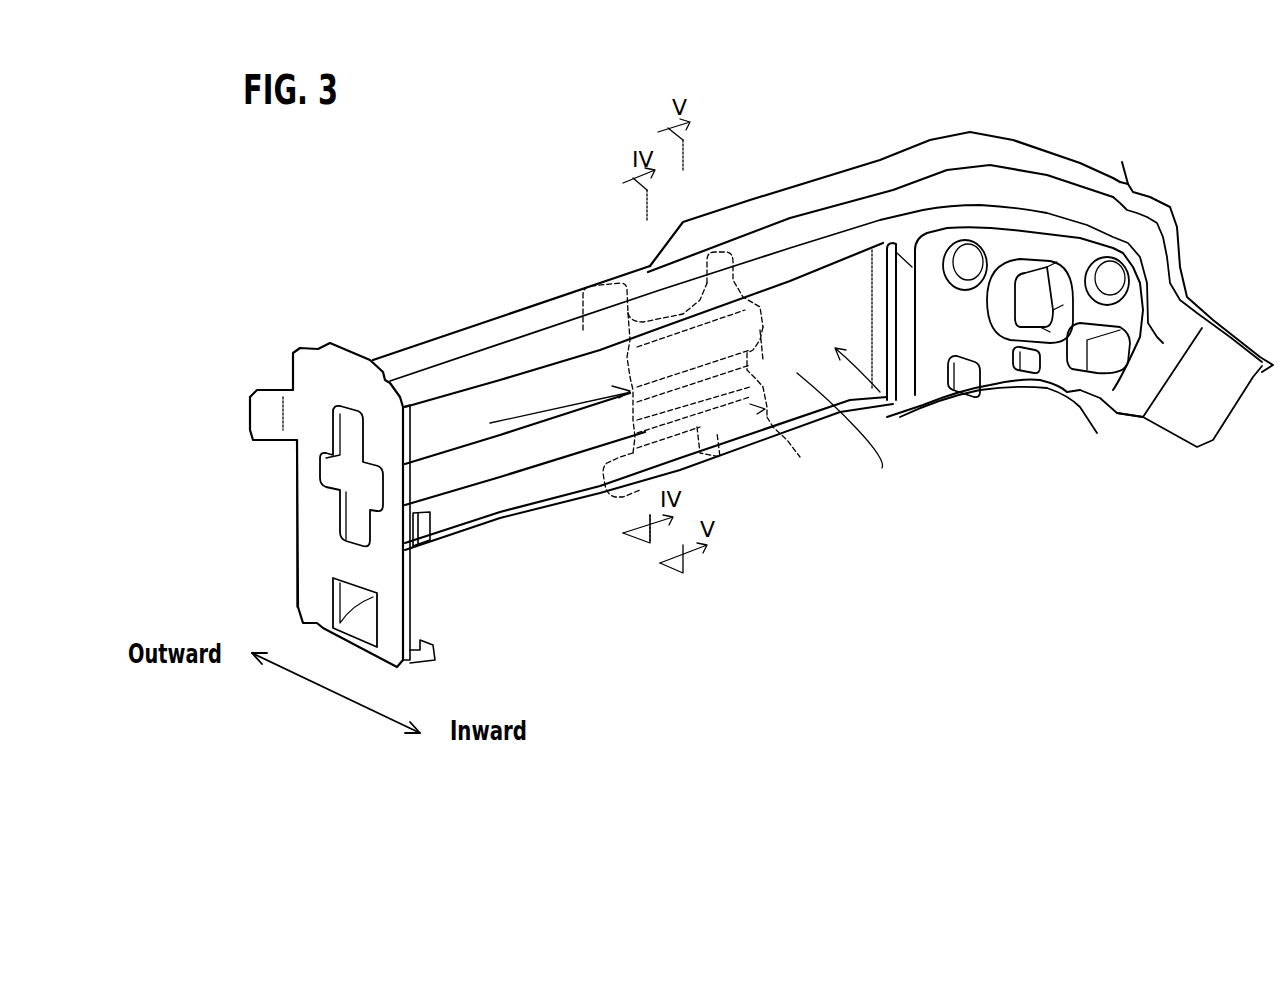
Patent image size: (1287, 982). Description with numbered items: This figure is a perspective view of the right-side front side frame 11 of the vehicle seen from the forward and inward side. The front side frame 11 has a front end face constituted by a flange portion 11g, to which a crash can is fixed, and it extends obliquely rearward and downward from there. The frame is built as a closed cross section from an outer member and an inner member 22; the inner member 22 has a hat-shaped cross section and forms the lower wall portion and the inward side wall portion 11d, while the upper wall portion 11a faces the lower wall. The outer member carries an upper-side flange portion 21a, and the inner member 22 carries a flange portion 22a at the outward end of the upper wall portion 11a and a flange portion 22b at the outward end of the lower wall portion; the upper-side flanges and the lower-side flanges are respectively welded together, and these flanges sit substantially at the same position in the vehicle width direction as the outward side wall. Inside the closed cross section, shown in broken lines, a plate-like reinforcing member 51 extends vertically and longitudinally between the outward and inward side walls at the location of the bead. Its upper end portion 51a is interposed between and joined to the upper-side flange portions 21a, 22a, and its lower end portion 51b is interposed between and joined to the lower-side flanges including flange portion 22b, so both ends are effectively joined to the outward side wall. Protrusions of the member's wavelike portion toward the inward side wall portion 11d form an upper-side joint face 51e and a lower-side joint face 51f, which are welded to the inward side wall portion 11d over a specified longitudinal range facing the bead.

The front side frame 11 is at (431, 297).
The upper wall portion 11a is at (522, 348).
The inward side wall portion 11d is at (865, 369).
The flange portion 11g is at (312, 508).
The flange portion 21a is at (833, 188).
The inner member 22 is at (887, 397).
The flange portion 22a is at (887, 207).
The flange portion 22b is at (565, 505).
The reinforcing member 51 is at (767, 410).
The upper end portion 51a is at (595, 285).
The lower end portion 51b is at (623, 500).
The upper-side joint face 51e is at (767, 320).
The lower-side joint face 51f is at (710, 440).